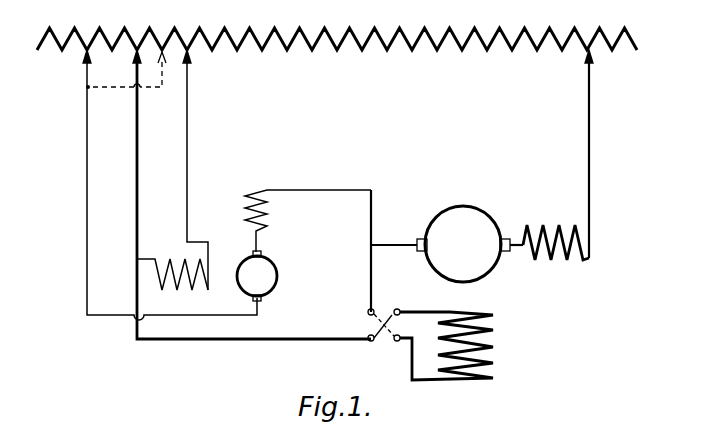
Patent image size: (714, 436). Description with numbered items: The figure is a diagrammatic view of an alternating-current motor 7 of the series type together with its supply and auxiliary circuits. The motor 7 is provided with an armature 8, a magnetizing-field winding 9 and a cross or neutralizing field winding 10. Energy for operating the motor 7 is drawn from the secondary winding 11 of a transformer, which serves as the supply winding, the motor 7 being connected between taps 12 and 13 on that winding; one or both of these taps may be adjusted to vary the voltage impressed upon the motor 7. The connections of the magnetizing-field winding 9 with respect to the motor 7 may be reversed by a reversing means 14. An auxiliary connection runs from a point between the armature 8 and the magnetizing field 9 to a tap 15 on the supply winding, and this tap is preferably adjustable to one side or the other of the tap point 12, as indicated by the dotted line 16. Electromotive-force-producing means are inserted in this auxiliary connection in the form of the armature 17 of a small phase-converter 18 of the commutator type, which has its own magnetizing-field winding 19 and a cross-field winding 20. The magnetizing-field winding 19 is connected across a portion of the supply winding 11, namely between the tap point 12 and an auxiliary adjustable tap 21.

The alternating-current motor 7 is at (512, 304).
The armature 8 is at (465, 212).
The magnetizing-field winding 9 is at (483, 347).
The cross or neutralizing field winding 10 is at (556, 261).
The secondary winding 11 is at (371, 27).
The tap 12 is at (136, 69).
The tap 13 is at (594, 63).
The reversing means 14 is at (383, 340).
The tap 15 is at (85, 77).
The dotted line 16 is at (147, 89).
The armature 17 is at (278, 276).
The phase-converter 18 is at (236, 253).
The magnetizing-field winding 19 is at (183, 285).
The cross-field winding 20 is at (268, 203).
The auxiliary adjustable tap 21 is at (190, 72).